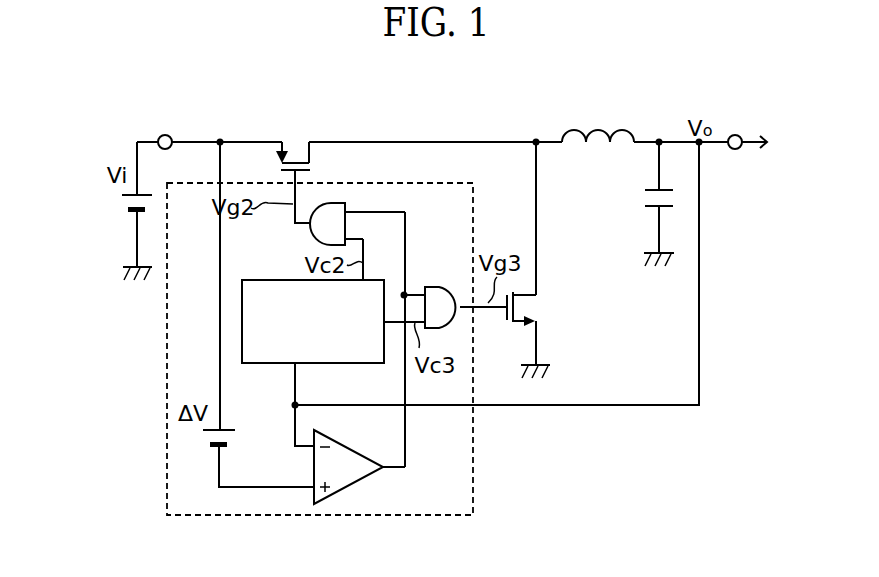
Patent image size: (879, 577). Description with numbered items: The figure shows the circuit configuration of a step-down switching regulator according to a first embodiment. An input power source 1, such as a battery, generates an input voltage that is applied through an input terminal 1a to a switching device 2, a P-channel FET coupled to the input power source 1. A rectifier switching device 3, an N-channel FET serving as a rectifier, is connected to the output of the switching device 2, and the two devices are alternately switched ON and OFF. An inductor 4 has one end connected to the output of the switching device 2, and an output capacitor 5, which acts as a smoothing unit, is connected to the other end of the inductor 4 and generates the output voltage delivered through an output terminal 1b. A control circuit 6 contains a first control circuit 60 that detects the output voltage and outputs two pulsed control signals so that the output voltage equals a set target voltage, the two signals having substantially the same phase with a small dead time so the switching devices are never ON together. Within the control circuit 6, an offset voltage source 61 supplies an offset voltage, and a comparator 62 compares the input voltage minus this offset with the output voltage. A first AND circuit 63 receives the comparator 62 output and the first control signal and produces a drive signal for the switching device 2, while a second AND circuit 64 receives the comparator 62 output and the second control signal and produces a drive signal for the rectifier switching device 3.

The input power source 1 is at (129, 212).
The input terminal 1a is at (165, 134).
The output terminal 1b is at (735, 150).
The switching device 2 is at (303, 150).
The rectifier switching device 3 is at (524, 298).
The inductor 4 is at (596, 124).
The output capacitor 5 is at (646, 207).
The control circuit 6 is at (473, 448).
The first control circuit 60 is at (265, 365).
The offset voltage source 61 is at (223, 448).
The comparator 62 is at (357, 481).
The first AND circuit 63 is at (310, 238).
The second AND circuit 64 is at (448, 285).